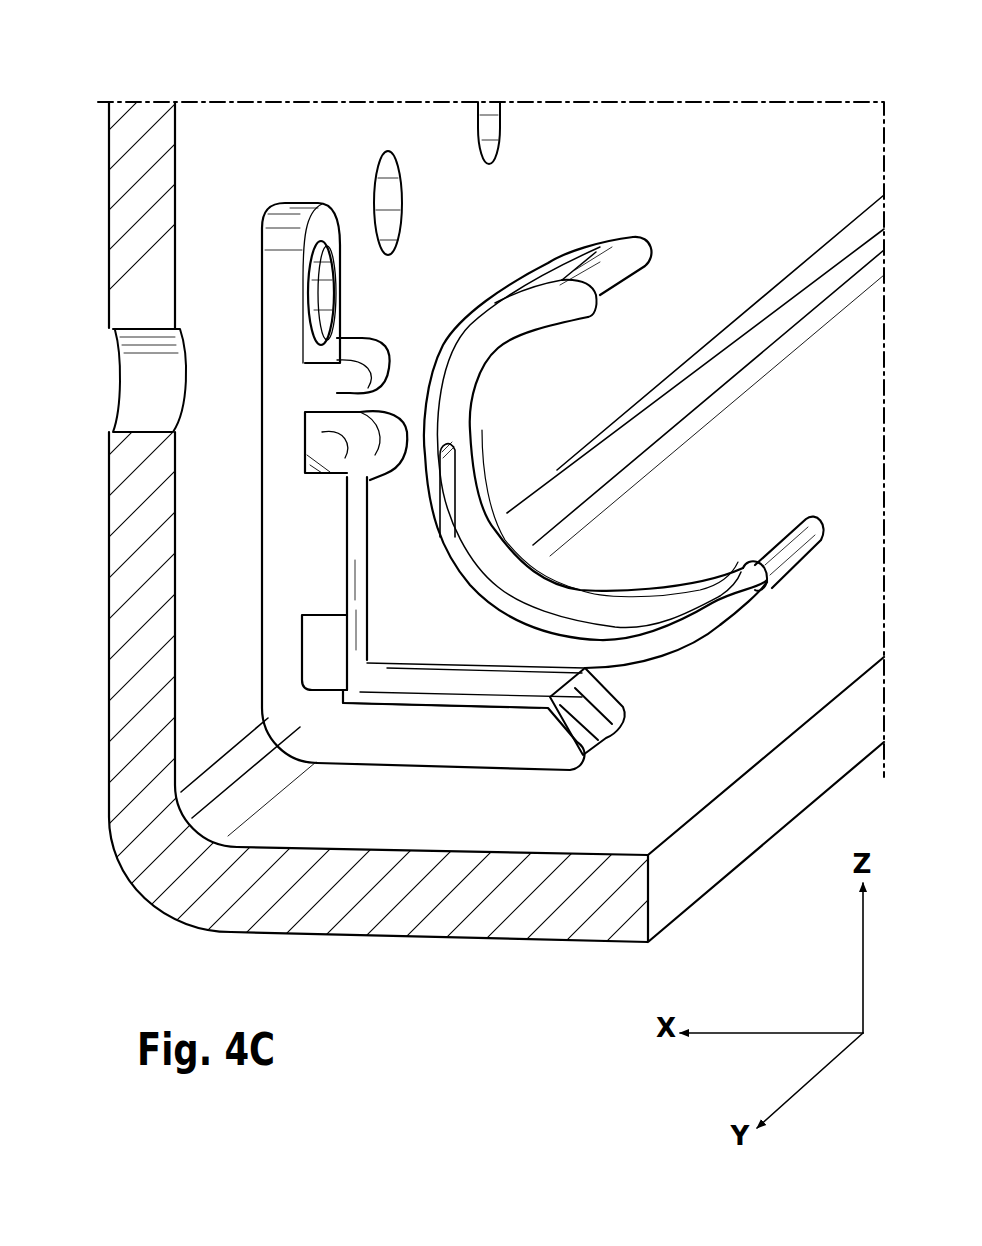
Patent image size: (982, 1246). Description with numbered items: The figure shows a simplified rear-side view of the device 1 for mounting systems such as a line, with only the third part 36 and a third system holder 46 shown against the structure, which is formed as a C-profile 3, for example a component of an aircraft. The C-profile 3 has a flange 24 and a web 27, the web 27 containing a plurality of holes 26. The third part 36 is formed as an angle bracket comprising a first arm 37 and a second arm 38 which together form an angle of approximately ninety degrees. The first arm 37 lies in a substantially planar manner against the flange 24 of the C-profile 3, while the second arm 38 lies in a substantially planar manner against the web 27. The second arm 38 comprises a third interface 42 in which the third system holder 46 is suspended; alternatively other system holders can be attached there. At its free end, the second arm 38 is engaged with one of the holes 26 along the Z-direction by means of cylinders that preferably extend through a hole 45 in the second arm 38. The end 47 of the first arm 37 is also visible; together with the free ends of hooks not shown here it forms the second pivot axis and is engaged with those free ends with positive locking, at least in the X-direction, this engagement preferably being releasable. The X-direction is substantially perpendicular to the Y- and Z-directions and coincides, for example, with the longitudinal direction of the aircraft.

The device 1 is at (734, 85).
The C-profile 3 is at (106, 146).
The flange 24 is at (557, 925).
The holes 26 is at (496, 130).
The web 27 is at (133, 709).
The third part 36 is at (293, 535).
The first arm 37 is at (410, 755).
The second arm 38 is at (284, 610).
The third interface 42 is at (312, 453).
The hole 45 is at (329, 290).
The third system holder 46 is at (706, 625).
The end 47 is at (604, 738).